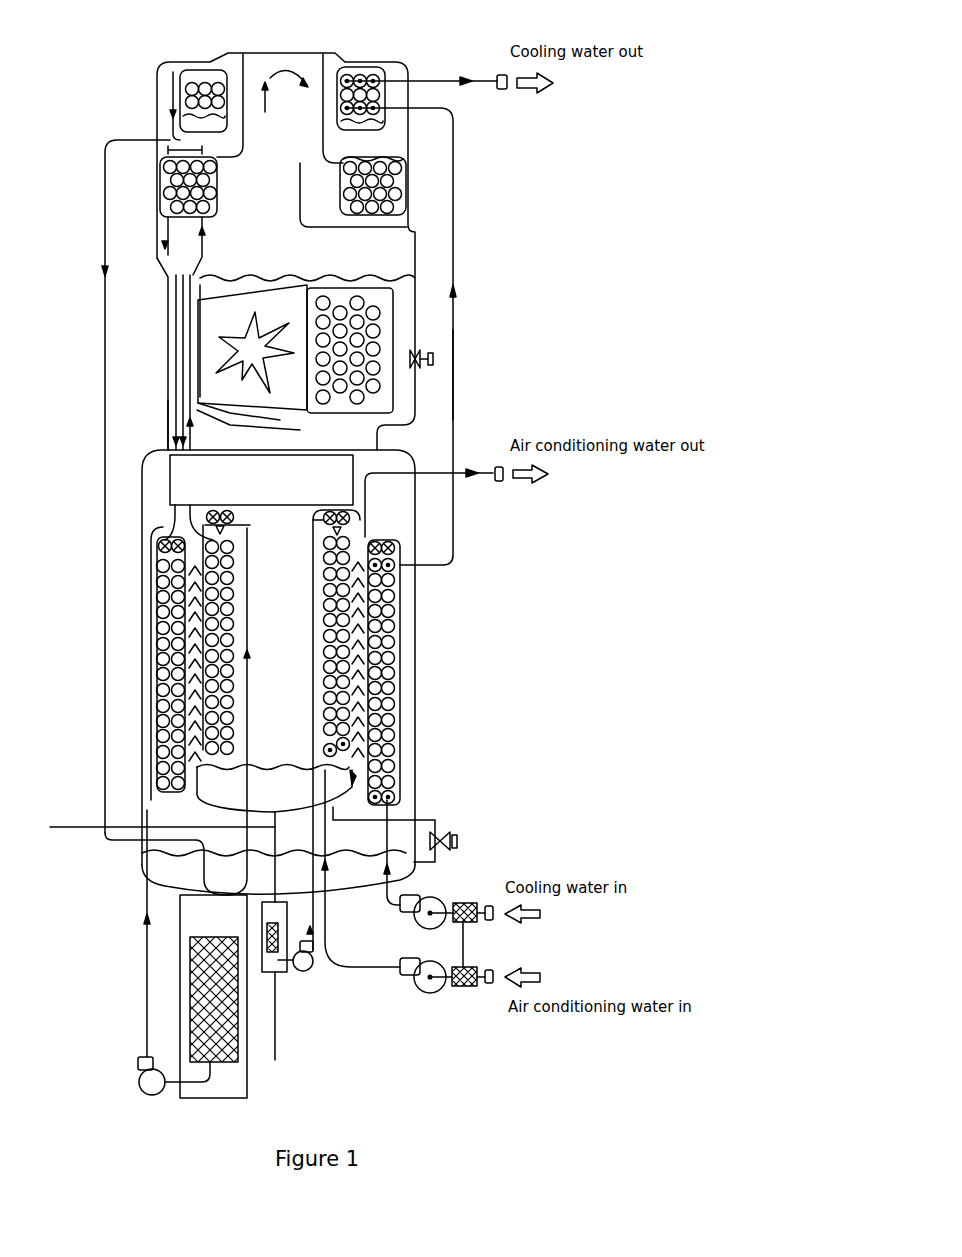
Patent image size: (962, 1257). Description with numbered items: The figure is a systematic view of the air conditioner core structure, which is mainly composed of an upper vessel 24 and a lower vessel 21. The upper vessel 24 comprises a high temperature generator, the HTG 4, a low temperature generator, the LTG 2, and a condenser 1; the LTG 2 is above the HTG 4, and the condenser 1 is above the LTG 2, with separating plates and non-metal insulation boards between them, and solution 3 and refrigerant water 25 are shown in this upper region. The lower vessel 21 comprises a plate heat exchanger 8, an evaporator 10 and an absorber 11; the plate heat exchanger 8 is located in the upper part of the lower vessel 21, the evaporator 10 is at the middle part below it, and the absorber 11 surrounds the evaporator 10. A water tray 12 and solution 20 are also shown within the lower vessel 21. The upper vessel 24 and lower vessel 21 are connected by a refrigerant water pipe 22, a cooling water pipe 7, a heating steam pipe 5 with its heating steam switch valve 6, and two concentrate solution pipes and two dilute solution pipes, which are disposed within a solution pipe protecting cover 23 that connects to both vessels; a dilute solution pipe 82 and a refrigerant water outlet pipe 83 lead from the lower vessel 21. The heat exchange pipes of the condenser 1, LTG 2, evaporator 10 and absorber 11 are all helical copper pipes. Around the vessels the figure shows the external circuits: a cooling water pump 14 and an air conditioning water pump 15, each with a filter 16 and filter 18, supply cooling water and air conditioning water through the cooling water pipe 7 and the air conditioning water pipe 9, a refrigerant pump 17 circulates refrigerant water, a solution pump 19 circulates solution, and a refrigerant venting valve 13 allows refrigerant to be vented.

The condenser 1 is at (372, 70).
The LTG 2 is at (380, 152).
The solution 3 is at (298, 279).
The HTG 4 is at (413, 267).
The heating steam pipe 5 is at (415, 312).
The heating steam switch valve 6 is at (433, 357).
The cooling water pipe 7 is at (453, 375).
The plate heat exchanger 8 is at (287, 478).
The air conditioning water pipe 9 is at (435, 477).
The evaporator 10 is at (327, 600).
The absorber 11 is at (390, 685).
The water tray 12 is at (350, 772).
The refrigerant venting valve 13 is at (450, 835).
The cooling water pump 14 is at (413, 900).
The air conditioning water pump 15 is at (428, 963).
The filter 16 is at (468, 985).
The refrigerant pump 17 is at (306, 971).
The filter 18 is at (210, 1022).
The solution pump 19 is at (130, 1073).
The solution 20 is at (170, 870).
The lower vessel 21 is at (143, 662).
The refrigerant water pipe 22 is at (105, 530).
The solution pipe protecting cover 23 is at (167, 430).
The upper vessel 24 is at (157, 237).
The refrigerant water 25 is at (177, 118).
The dilute solution pipe 82 is at (148, 807).
The refrigerant water outlet pipe 83 is at (162, 813).